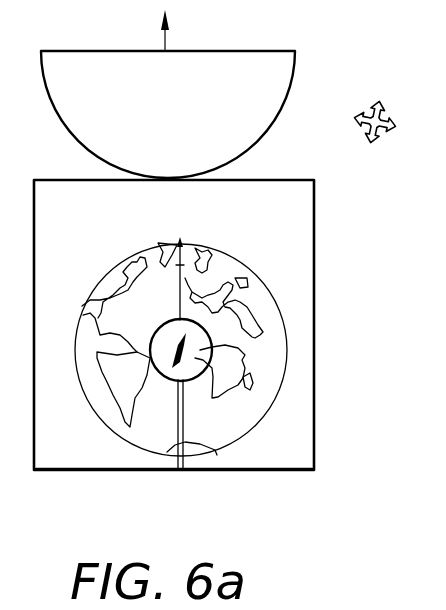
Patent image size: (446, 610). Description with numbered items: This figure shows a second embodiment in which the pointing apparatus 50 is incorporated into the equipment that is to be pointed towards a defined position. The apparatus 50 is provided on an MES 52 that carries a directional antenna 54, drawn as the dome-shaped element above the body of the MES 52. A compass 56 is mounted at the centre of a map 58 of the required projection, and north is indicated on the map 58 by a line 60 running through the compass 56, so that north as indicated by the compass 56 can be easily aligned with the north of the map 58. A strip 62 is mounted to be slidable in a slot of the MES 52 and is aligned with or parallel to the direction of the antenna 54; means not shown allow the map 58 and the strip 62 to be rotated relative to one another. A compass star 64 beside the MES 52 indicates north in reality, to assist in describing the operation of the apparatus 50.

The apparatus 50 is at (112, 450).
The MES 52 is at (65, 471).
The directional antenna 54 is at (97, 133).
The compass 56 is at (212, 357).
The map 58 is at (229, 339).
The line 60 is at (183, 249).
The strip 62 is at (181, 470).
The compass star 64 is at (383, 140).